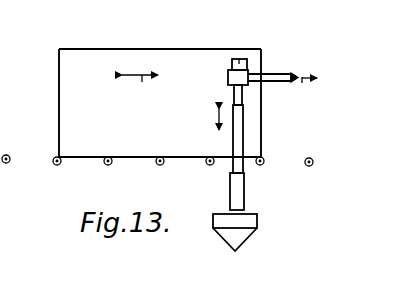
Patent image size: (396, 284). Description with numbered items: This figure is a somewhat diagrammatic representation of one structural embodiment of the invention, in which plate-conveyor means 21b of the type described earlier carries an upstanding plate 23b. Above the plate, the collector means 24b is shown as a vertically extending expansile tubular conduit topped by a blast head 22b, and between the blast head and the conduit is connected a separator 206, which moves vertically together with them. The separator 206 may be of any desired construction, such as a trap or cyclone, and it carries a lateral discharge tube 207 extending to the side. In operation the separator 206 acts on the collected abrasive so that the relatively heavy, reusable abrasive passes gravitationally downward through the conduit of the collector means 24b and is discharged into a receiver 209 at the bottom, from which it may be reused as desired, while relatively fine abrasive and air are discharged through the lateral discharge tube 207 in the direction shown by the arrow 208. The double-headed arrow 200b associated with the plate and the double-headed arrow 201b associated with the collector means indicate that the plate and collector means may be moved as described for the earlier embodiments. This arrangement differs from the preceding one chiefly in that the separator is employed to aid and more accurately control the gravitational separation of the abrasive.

The plate-conveyor means 21b is at (57, 165).
The blast head 22b is at (240, 59).
The upstanding plate 23b is at (196, 49).
The collector means 24b is at (238, 130).
The double-headed arrow 200b is at (142, 89).
The double-headed arrow 201b is at (218, 124).
The separator 206 is at (228, 78).
The lateral discharge tube 207 is at (284, 74).
The arrow 208 is at (323, 107).
The receiver 209 is at (257, 222).